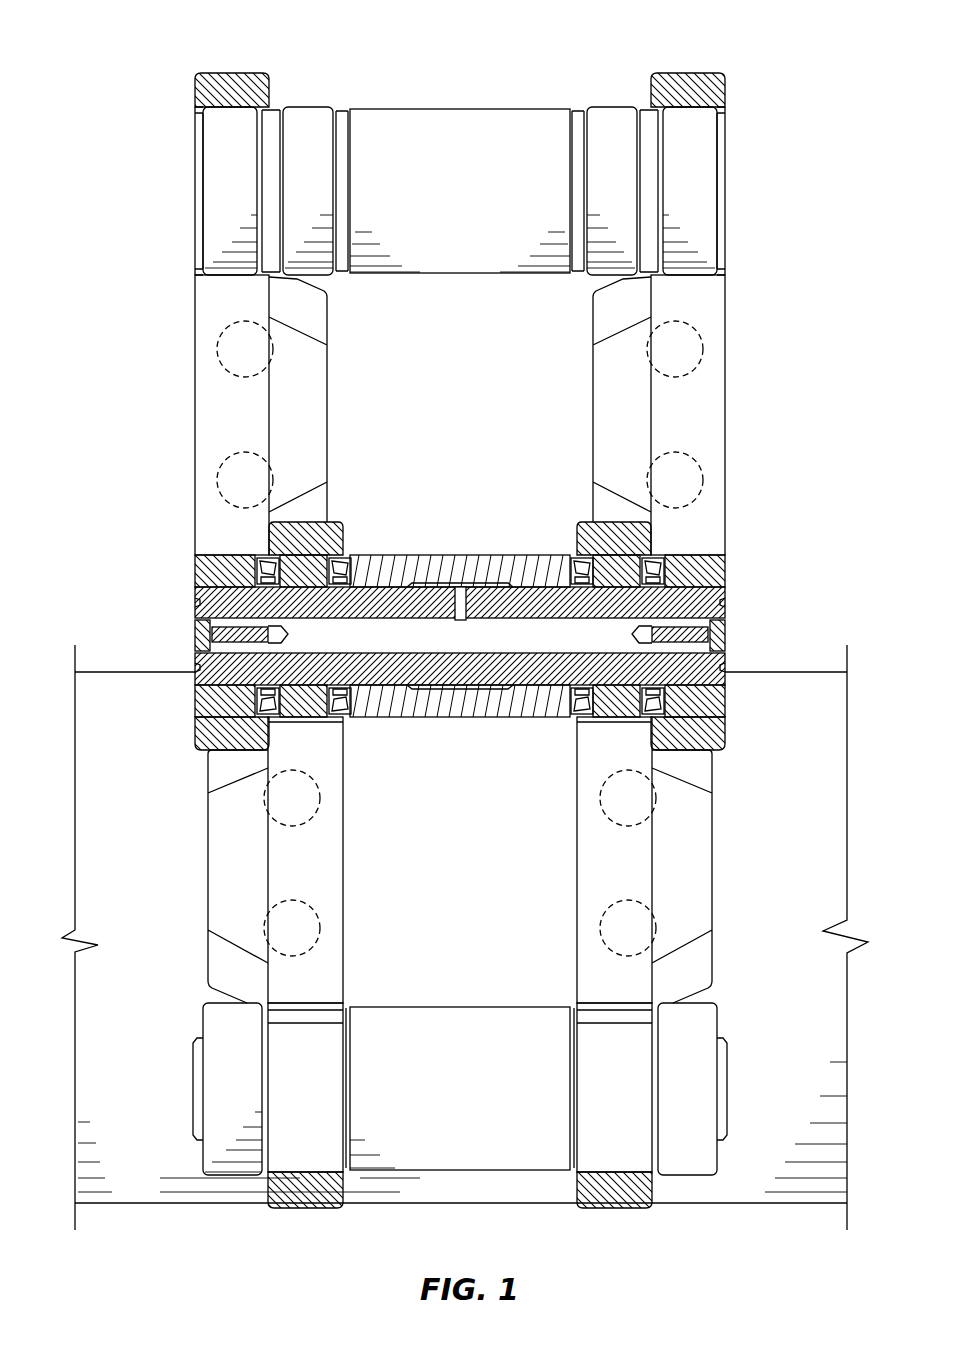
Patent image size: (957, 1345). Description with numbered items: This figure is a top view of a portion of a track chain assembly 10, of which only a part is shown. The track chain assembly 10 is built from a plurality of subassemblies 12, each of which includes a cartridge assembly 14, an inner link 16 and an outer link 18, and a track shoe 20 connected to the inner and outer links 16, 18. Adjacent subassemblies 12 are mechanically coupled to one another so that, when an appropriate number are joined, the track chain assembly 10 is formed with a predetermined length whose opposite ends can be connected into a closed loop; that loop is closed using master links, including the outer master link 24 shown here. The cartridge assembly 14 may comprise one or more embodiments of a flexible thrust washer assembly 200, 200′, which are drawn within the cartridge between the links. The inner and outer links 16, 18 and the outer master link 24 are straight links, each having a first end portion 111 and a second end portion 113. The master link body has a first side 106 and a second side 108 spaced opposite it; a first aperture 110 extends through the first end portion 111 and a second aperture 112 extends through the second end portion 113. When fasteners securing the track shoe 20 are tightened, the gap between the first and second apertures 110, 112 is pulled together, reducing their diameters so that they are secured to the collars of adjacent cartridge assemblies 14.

The track chain assembly 10 is at (155, 40).
The subassembly 12 is at (718, 777).
The cartridge assembly 14 is at (474, 722).
The inner link 16 is at (208, 955).
The outer link 18 is at (713, 955).
The track shoe 20 is at (143, 670).
The outer master link 24 is at (195, 192).
The first side 106 is at (195, 415).
The second side 108 is at (327, 408).
The first aperture 110 is at (195, 560).
The first end portion 111 is at (195, 733).
The second aperture 112 is at (233, 275).
The second end portion 113 is at (195, 98).
The flexible thrust washer assembly 200 is at (650, 594).
The flexible thrust washer assembly 200′ is at (270, 594).